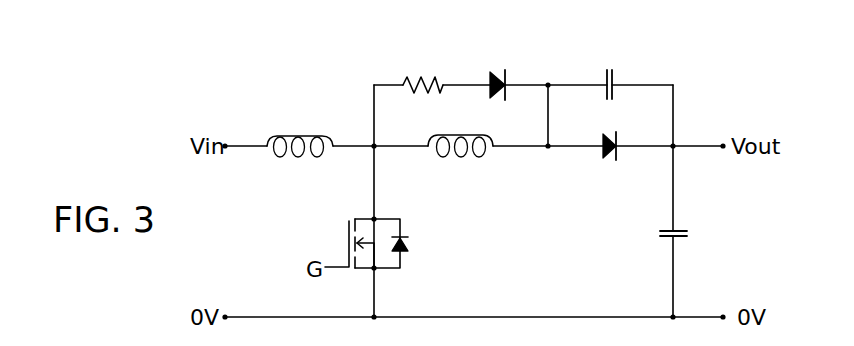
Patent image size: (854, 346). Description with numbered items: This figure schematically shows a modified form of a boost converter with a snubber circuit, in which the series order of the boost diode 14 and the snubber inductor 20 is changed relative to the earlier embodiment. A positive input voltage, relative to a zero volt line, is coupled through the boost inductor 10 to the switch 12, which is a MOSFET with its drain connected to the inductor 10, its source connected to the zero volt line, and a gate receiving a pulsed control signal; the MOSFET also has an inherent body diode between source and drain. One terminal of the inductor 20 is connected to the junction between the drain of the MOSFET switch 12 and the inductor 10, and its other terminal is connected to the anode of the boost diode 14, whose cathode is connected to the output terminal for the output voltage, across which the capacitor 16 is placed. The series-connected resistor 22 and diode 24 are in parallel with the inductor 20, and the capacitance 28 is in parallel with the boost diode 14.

The inductor 10 is at (298, 160).
The switch 12 is at (334, 249).
The diode 14 is at (611, 161).
The capacitor 16 is at (659, 232).
The inductor 20 is at (460, 160).
The resistor 22 is at (423, 74).
The diode 24 is at (500, 74).
The capacitance 28 is at (608, 70).